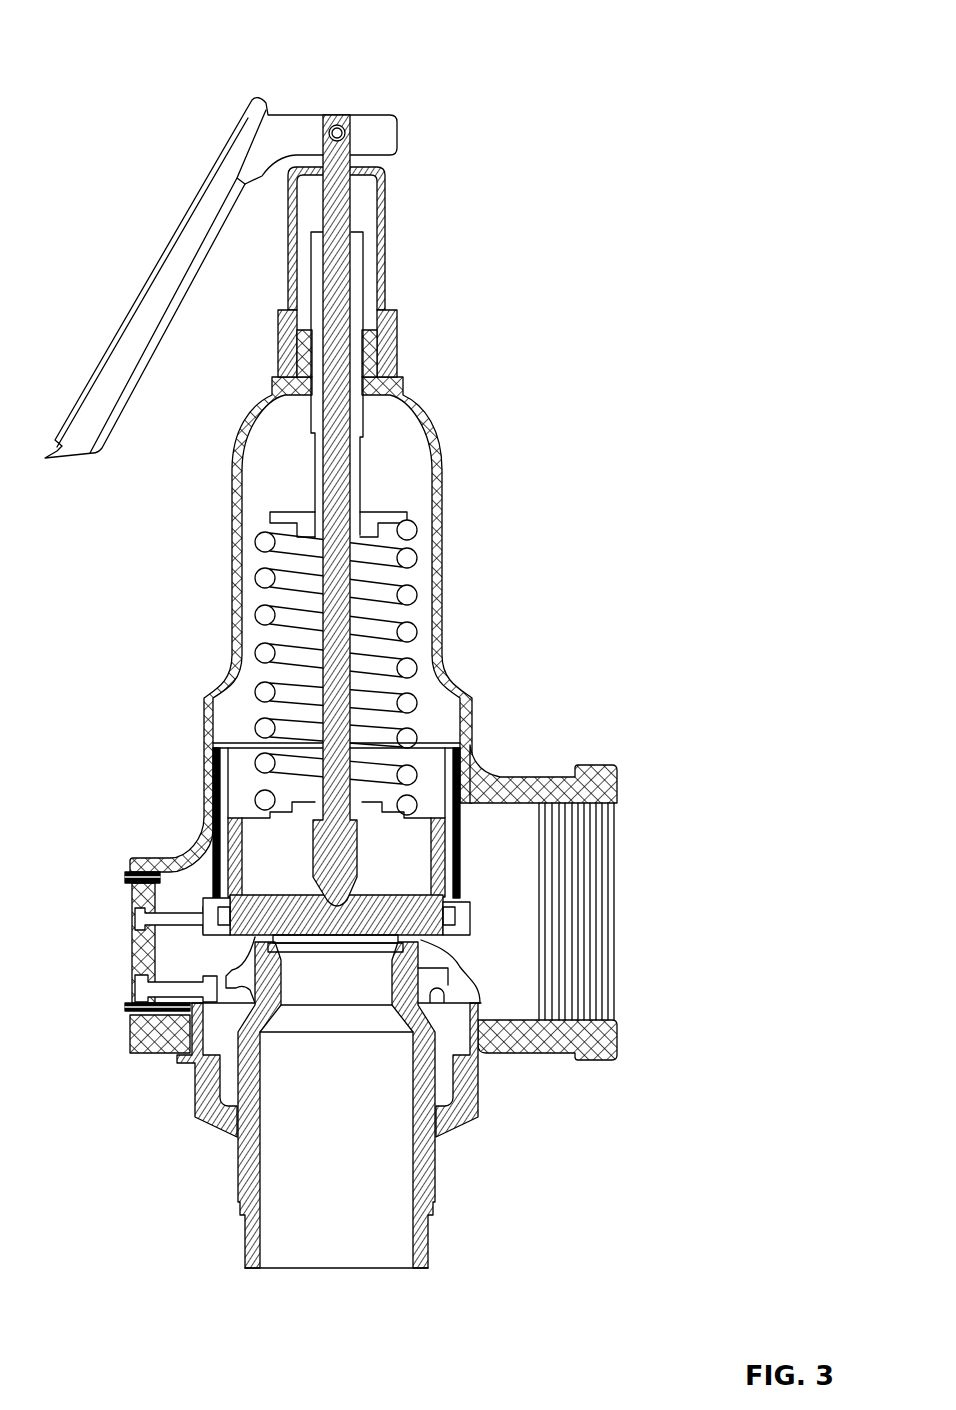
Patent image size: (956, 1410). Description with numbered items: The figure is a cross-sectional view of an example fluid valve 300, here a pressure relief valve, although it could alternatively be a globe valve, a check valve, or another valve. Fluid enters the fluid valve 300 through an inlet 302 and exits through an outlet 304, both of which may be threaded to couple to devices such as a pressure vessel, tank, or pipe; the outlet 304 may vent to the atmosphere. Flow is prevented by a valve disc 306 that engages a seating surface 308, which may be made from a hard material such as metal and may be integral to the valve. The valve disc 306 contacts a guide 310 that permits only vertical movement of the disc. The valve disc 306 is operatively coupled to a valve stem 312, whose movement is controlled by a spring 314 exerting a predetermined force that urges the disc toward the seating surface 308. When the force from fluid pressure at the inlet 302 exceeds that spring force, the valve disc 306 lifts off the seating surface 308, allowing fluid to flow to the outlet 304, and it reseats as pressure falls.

The fluid valve 300 is at (683, 42).
The inlet 302 is at (332, 1270).
The outlet 304 is at (618, 920).
The valve disc 306 is at (237, 843).
The seating surface 308 is at (407, 932).
The guide 310 is at (448, 770).
The valve stem 312 is at (333, 470).
The spring 314 is at (390, 630).